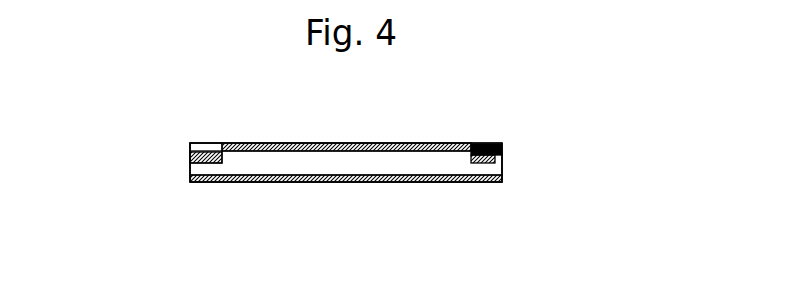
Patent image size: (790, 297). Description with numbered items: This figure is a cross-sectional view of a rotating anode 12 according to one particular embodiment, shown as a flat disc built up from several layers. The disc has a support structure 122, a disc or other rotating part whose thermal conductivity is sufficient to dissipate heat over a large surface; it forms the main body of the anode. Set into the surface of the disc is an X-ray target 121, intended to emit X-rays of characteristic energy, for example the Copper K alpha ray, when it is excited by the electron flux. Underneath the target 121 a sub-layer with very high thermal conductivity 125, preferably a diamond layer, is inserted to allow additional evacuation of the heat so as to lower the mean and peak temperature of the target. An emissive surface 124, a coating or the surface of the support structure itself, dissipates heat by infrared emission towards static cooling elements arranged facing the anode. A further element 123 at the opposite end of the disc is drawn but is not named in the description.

The rotating anode 12 is at (157, 193).
The X-ray target 121 is at (502, 148).
The support structure 122 is at (280, 165).
The connector 123 is at (193, 149).
The emissive surface 124 is at (472, 144).
The sub-layer with very high thermal conductivity 125 is at (497, 160).